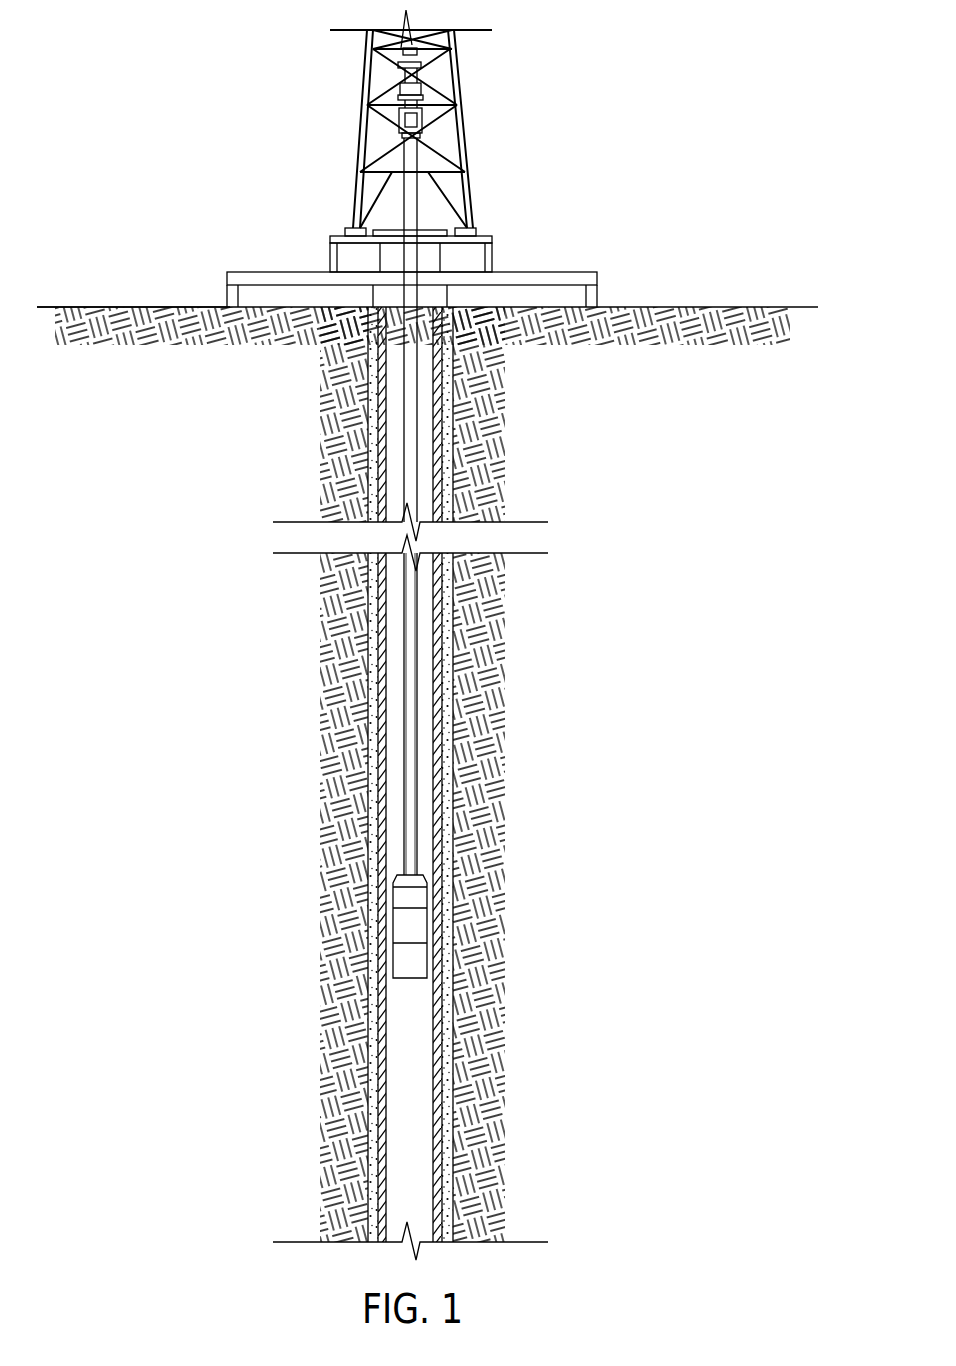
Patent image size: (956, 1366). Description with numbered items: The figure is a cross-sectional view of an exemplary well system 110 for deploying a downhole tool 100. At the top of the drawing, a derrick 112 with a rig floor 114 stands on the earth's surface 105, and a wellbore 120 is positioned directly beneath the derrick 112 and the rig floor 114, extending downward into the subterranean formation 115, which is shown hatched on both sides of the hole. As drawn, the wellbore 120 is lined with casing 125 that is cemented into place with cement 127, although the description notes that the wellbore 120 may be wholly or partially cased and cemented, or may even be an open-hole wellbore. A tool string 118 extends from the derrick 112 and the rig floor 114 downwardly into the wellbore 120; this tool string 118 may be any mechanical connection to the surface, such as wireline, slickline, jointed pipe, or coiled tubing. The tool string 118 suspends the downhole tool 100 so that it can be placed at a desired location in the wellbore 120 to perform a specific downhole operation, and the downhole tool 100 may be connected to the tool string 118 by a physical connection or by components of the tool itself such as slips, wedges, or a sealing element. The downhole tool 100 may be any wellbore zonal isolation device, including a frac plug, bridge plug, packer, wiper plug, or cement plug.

The downhole tool 100 is at (423, 925).
The earth's surface 105 is at (105, 307).
The well system 110 is at (627, 121).
The derrick 112 is at (360, 128).
The rig floor 114 is at (254, 272).
The subterranean formation 115 is at (493, 1173).
The tool string 118 is at (417, 827).
The wellbore 120 is at (423, 717).
The casing 125 is at (435, 1095).
The cement 127 is at (452, 775).